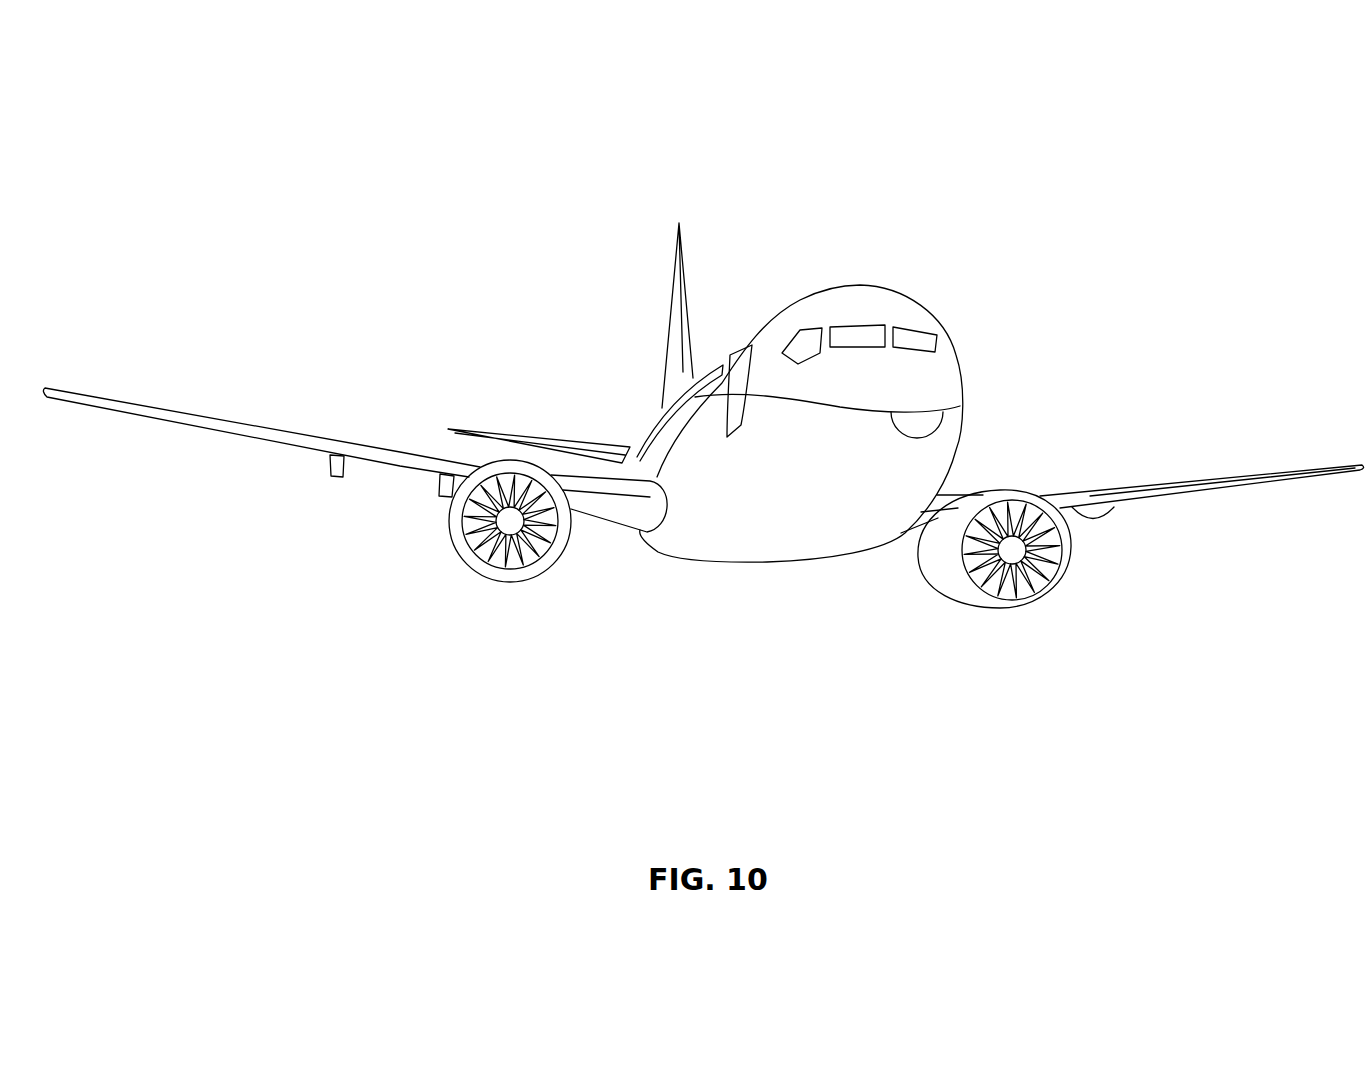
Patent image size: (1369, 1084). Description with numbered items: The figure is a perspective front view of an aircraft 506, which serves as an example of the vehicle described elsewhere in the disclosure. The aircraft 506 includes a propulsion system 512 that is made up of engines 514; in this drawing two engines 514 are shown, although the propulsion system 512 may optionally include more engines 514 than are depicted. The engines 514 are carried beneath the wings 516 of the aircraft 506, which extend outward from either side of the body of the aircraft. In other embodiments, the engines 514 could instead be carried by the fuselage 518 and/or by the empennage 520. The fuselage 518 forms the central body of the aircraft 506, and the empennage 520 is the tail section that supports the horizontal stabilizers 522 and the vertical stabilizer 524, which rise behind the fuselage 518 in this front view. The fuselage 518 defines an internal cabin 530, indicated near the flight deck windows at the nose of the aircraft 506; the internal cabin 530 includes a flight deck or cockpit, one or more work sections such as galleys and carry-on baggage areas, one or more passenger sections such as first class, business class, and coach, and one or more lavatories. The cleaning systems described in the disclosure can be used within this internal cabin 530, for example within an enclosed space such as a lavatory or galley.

The aircraft 506 is at (372, 152).
The propulsion system 512 is at (378, 549).
The engines 514 is at (500, 582).
The wings 516 is at (218, 420).
The fuselage 518 is at (960, 367).
The empennage 520 is at (663, 407).
The horizontal stabilizers 522 is at (498, 433).
The vertical stabilizer 524 is at (675, 273).
The internal cabin 530 is at (862, 328).